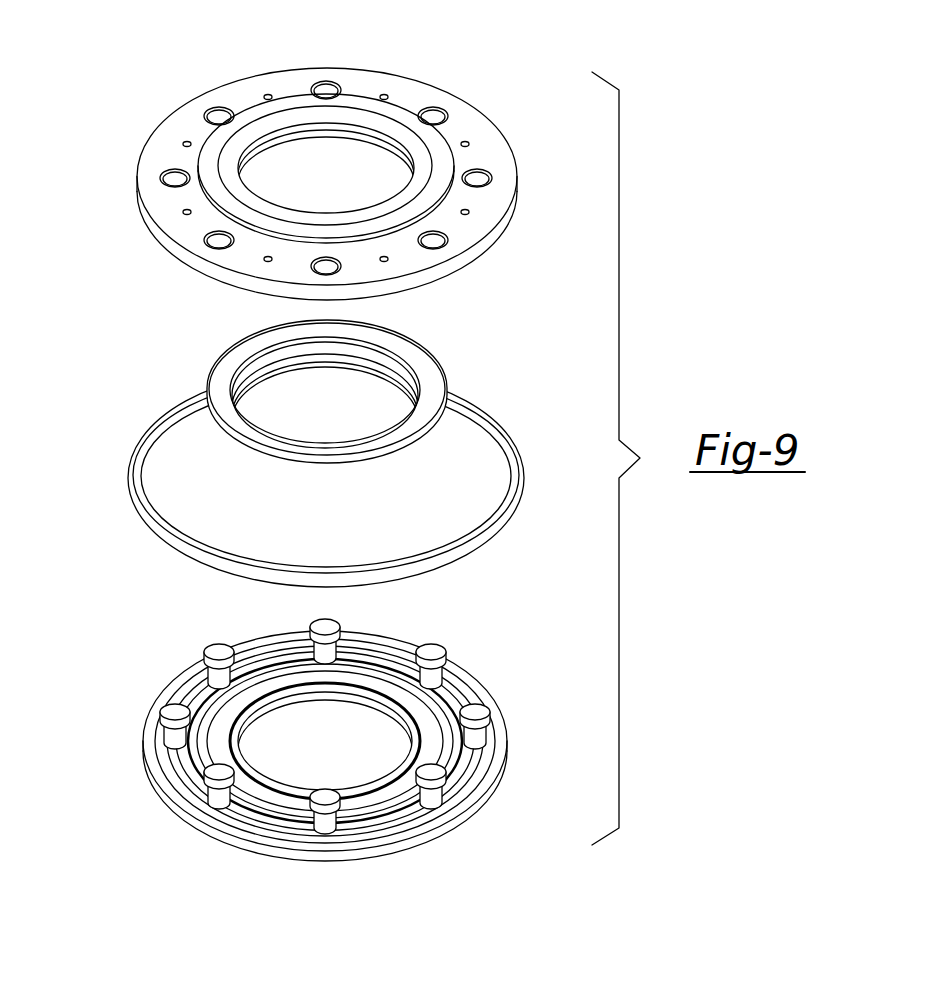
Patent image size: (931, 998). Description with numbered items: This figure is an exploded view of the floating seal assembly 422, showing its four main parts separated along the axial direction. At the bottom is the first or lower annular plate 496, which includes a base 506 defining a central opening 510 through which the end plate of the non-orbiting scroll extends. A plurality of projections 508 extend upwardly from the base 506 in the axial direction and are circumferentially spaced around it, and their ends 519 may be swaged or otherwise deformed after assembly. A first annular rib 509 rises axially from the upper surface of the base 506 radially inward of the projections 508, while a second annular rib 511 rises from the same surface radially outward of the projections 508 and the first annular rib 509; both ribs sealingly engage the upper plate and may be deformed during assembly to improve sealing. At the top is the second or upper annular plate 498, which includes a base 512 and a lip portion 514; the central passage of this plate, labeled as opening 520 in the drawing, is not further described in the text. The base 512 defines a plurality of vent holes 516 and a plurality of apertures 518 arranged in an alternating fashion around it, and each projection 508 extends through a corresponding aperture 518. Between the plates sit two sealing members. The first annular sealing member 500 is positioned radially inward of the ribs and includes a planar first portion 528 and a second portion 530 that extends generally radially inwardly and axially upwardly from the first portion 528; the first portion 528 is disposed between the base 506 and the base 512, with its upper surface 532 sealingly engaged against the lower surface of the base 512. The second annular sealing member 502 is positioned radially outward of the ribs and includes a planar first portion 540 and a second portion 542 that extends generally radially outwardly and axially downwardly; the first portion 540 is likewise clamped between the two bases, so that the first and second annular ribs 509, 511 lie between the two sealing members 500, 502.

The seal assembly 422 is at (100, 195).
The second annular plate 498 is at (488, 98).
The base 512 is at (232, 95).
The lip portion 514 is at (238, 158).
The central bore 520 is at (297, 148).
The apertures 518 is at (432, 237).
The vent holes 516 is at (265, 259).
The first annular sealing member 500 is at (302, 470).
The second annular sealing member 502 is at (155, 548).
The second portion 542 is at (135, 473).
The planar first portion 540 is at (210, 545).
The upper surface 532 is at (433, 380).
The second portion 530 is at (390, 427).
The planar first portion 528 is at (413, 425).
The first annular plate 496 is at (155, 835).
The second annular rib 511 is at (498, 772).
The base 506 is at (283, 850).
The first annular rib 509 is at (449, 738).
The central opening 510 is at (347, 715).
The projections 508 is at (324, 828).
The ends 519 is at (435, 652).